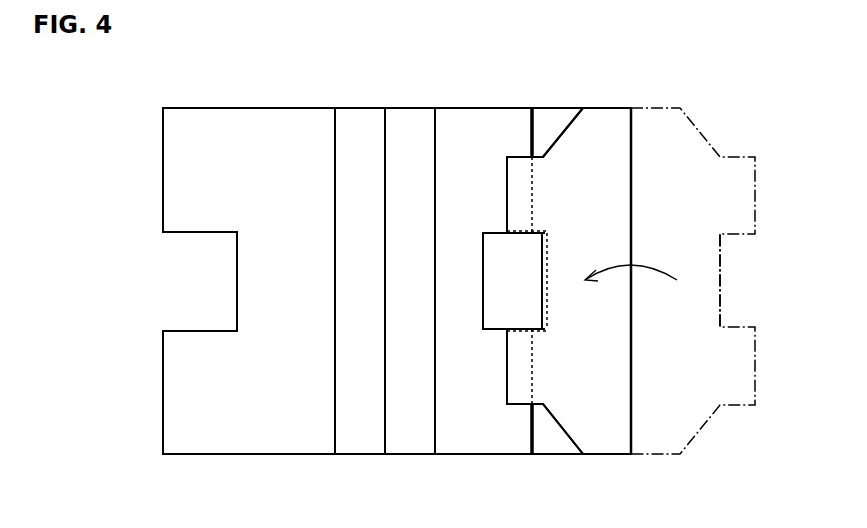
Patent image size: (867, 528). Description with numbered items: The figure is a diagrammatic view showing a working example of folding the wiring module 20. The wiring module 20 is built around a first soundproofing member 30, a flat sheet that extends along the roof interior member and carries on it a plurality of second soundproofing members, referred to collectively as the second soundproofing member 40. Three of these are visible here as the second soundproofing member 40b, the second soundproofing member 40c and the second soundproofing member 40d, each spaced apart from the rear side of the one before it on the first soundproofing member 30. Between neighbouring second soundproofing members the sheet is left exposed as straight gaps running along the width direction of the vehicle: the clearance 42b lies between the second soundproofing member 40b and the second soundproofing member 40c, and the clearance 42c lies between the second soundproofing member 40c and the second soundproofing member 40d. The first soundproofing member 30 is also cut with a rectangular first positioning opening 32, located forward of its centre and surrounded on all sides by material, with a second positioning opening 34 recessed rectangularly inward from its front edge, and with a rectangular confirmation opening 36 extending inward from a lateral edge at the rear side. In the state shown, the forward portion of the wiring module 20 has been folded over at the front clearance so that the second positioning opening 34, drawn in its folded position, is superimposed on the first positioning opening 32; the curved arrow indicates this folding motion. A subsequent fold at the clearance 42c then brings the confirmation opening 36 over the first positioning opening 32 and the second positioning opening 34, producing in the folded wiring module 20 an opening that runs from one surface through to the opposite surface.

The wiring module 20 is at (461, 101).
The first soundproofing member 30 is at (362, 446).
The first positioning opening 32 is at (496, 232).
The second positioning opening 34 is at (540, 308).
The confirmation opening 36 is at (190, 233).
The second soundproofing member 40 is at (553, 115).
The second soundproofing member 40b is at (552, 446).
The second soundproofing member 40c is at (412, 446).
The second soundproofing member 40d is at (257, 446).
The clearance 42b is at (532, 138).
The clearance 42c is at (337, 138).